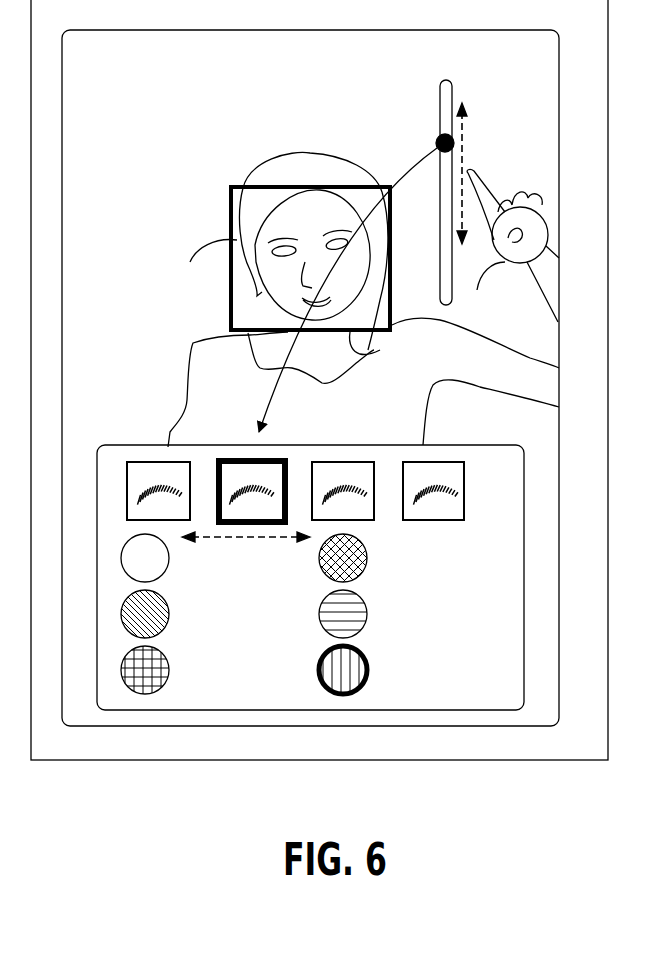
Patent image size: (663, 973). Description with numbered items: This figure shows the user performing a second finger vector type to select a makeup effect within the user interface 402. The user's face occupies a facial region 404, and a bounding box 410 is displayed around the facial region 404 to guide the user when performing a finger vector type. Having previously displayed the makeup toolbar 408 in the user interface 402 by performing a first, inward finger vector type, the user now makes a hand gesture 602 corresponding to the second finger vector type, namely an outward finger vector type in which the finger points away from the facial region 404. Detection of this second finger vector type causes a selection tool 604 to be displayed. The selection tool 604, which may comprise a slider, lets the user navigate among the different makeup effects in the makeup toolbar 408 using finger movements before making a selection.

The user interface 402 is at (126, 69).
The facial region 404 is at (205, 182).
The makeup toolbar 408 is at (503, 697).
The bounding box 410 is at (363, 299).
The hand gesture 602 is at (467, 199).
The selection tool 604 is at (416, 90).